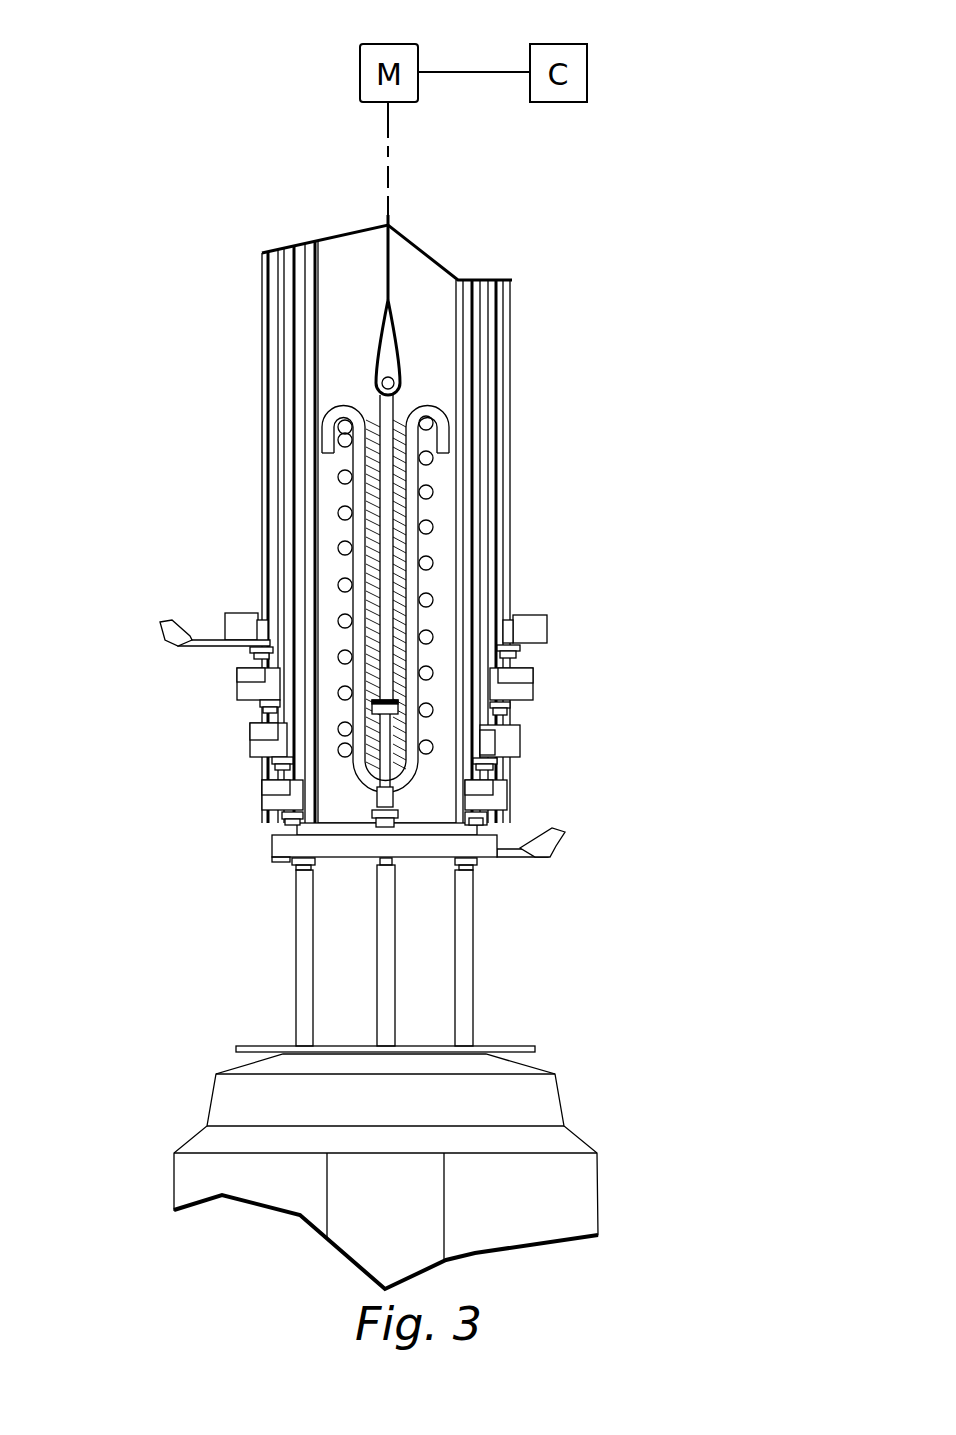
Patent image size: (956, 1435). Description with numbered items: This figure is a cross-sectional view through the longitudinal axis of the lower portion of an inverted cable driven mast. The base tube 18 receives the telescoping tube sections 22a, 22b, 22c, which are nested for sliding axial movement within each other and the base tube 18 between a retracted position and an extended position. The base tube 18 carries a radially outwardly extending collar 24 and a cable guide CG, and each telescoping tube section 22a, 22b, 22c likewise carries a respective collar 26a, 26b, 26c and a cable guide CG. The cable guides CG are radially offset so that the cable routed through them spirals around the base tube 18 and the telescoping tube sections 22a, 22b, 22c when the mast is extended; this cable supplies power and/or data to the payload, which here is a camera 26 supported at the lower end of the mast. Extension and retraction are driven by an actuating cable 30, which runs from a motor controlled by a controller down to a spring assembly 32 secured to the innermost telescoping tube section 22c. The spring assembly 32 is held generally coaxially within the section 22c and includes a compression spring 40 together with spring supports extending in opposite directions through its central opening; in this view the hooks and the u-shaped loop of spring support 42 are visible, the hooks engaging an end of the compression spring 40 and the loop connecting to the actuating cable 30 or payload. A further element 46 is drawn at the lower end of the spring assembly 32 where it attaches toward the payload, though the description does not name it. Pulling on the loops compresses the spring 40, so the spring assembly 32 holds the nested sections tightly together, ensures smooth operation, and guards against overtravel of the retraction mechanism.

The base tube 18 is at (495, 513).
The telescoping tube section 22a is at (480, 572).
The telescoping tube section 22b is at (473, 662).
The telescoping tube section 22c is at (462, 713).
The collar 24 is at (245, 618).
The camera 26 is at (530, 1200).
The collar 26a is at (245, 680).
The collar 26b is at (255, 733).
The collar 26c is at (265, 787).
The actuating cable 30 is at (384, 262).
The spring assembly 32 is at (390, 406).
The compression spring 40 is at (433, 492).
The spring support 42 is at (344, 407).
The bracket 46 is at (390, 714).
The cable guide CG is at (170, 636).